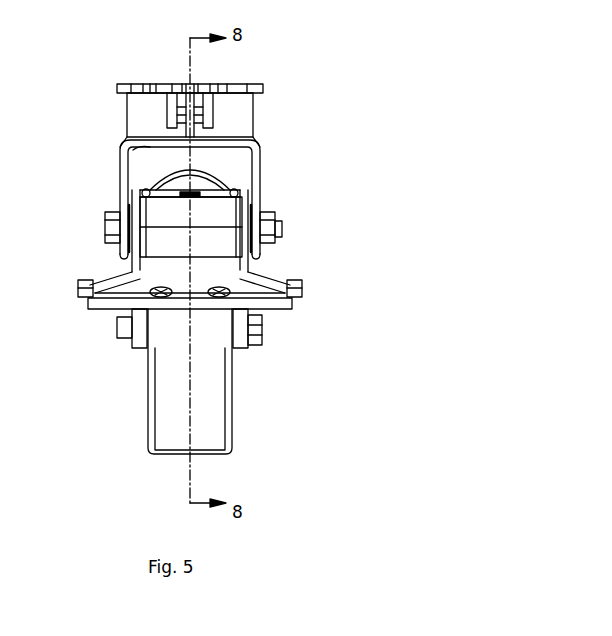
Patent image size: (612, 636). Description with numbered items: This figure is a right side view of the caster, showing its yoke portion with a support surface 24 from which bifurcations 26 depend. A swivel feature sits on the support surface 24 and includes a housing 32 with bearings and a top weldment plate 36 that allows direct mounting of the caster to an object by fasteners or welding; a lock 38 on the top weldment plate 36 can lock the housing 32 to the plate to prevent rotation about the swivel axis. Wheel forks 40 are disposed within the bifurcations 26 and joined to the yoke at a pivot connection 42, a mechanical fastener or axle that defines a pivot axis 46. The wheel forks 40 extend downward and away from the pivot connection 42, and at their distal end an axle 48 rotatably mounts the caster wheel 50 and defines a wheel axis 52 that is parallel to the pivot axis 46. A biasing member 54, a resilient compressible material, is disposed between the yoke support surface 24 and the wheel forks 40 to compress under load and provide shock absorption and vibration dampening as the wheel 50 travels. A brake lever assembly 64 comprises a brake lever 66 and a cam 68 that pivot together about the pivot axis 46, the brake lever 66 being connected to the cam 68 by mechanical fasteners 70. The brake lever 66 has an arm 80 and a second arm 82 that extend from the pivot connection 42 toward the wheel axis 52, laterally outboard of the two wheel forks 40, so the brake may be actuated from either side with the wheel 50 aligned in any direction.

The support surface 24 is at (218, 143).
The bifurcations 26 is at (120, 177).
The housing 32 is at (128, 112).
The top weldment plate 36 is at (136, 84).
The lock 38 is at (212, 84).
The wheel forks 40 is at (133, 207).
The pivot connection 42 is at (277, 238).
The pivot axis 46 is at (330, 229).
The axle 48 is at (258, 338).
The caster wheel 50 is at (232, 437).
The wheel axis 52 is at (335, 318).
The biasing member 54 is at (132, 162).
The brake lever assembly 64 is at (42, 273).
The brake lever 66 is at (292, 298).
The cam 68 is at (162, 237).
The mechanical fasteners 70 is at (93, 297).
The arm 80 is at (86, 282).
The second arm 82 is at (294, 282).